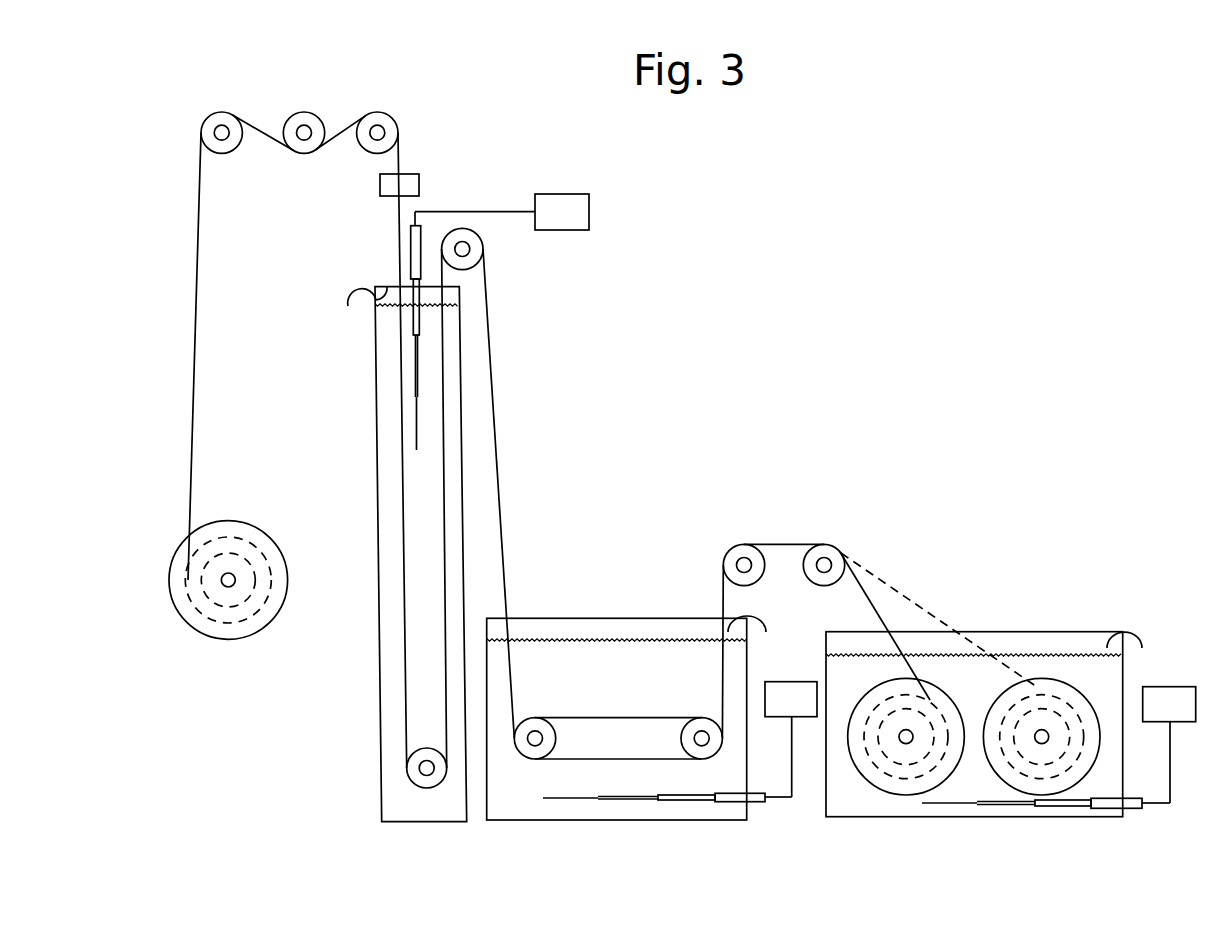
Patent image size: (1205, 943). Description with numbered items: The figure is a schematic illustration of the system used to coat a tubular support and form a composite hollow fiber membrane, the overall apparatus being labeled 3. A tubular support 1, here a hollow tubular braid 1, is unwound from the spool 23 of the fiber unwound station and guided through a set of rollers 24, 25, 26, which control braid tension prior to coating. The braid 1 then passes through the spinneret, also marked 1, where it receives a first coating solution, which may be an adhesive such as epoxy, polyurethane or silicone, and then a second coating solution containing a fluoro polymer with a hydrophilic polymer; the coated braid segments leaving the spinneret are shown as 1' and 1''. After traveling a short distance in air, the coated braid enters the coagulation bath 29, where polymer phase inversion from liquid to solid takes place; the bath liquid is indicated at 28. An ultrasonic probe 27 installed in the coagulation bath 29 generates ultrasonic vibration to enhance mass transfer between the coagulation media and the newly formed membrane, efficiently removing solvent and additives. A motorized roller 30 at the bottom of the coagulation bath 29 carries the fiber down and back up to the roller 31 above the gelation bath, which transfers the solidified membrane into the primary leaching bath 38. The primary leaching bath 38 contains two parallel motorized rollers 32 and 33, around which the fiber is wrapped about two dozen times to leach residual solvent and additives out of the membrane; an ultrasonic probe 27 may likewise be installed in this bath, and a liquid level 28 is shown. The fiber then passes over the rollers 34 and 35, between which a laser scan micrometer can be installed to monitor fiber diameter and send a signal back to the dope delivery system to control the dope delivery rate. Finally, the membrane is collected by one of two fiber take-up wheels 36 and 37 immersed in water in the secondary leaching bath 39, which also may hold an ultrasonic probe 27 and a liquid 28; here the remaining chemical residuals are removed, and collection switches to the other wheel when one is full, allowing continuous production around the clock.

The tubular support 1 is at (612, 441).
The wire segment 1' is at (454, 331).
The wire segment 1'' is at (423, 572).
The wire processing apparatus 3 is at (773, 377).
The spool 23 is at (228, 604).
The roller 24 is at (221, 116).
The roller 25 is at (303, 154).
The roller 26 is at (377, 116).
The ultrasonic probe 27 is at (788, 632).
The liquid 28 is at (743, 481).
The coagulation bath 29 is at (396, 554).
The motorized roller 30 is at (427, 783).
The roller 31 is at (485, 248).
The motorized roller 32 is at (534, 722).
The motorized roller 33 is at (701, 722).
The roller 34 is at (743, 545).
The roller 35 is at (823, 542).
The fiber take-up wheel 36 is at (906, 736).
The fiber take-up wheel 37 is at (1041, 736).
The primary leaching bath 38 is at (617, 720).
The secondary leaching bath 39 is at (974, 725).